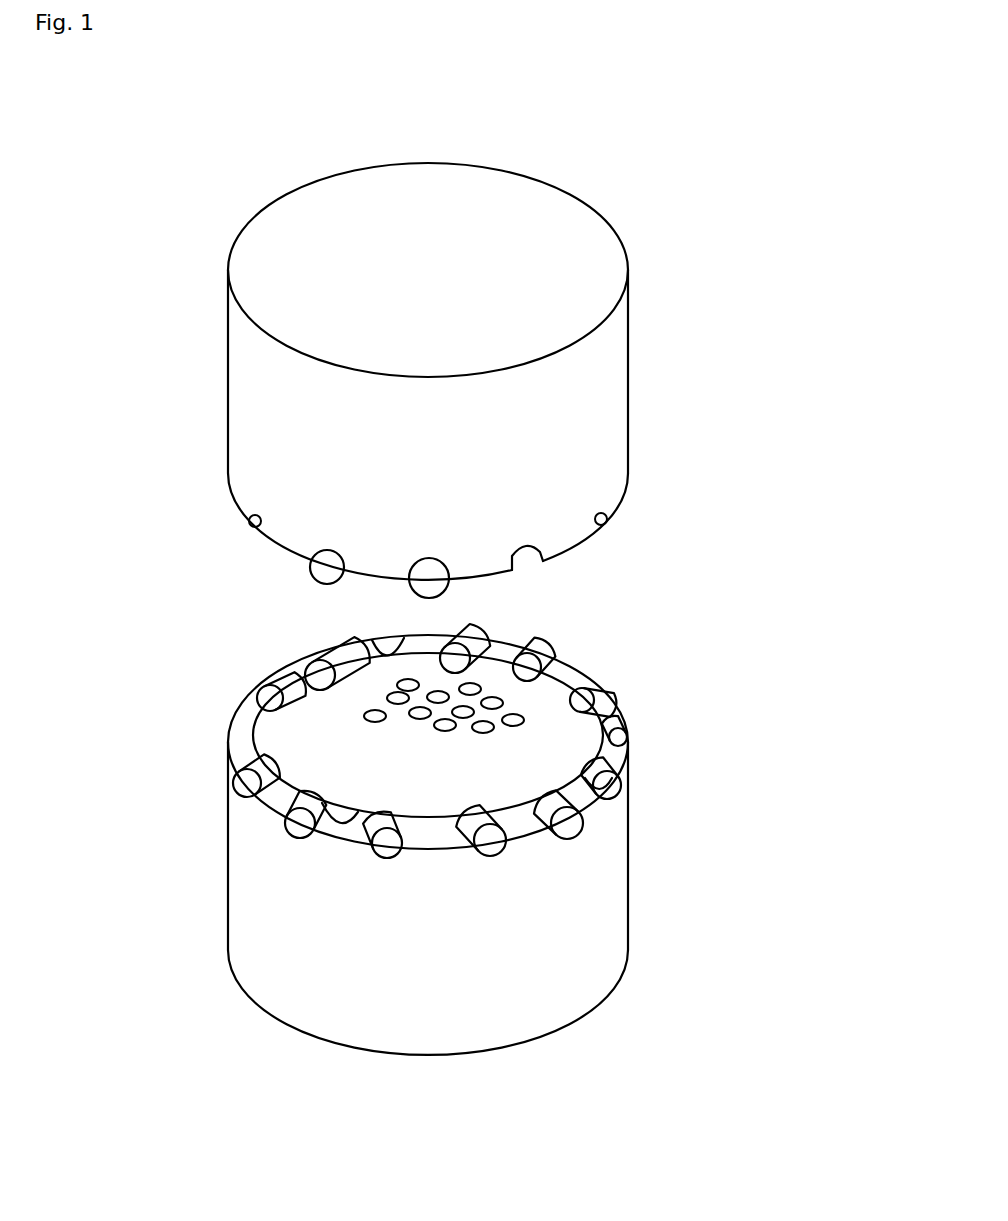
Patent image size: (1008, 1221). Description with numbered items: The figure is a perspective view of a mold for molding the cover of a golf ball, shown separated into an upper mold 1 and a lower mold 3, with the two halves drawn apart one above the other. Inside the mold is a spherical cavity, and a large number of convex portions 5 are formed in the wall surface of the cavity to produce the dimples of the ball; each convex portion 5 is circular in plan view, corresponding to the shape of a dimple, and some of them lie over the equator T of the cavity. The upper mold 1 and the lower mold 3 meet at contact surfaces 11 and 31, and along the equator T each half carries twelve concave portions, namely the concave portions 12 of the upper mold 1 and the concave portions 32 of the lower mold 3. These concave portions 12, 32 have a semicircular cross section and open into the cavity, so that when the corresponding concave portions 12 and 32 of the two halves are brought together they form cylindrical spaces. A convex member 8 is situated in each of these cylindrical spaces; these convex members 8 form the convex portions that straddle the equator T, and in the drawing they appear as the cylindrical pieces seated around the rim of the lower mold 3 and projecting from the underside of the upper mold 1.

The upper mold 1 is at (607, 409).
The lower mold 3 is at (592, 921).
The convex portions 5 is at (398, 681).
The convex member 8 is at (312, 575).
The contact surface 11 is at (583, 547).
The concave portions 12 is at (253, 524).
The contact surface 31 is at (252, 718).
The concave portions 32 is at (303, 826).
The equator T is at (350, 828).